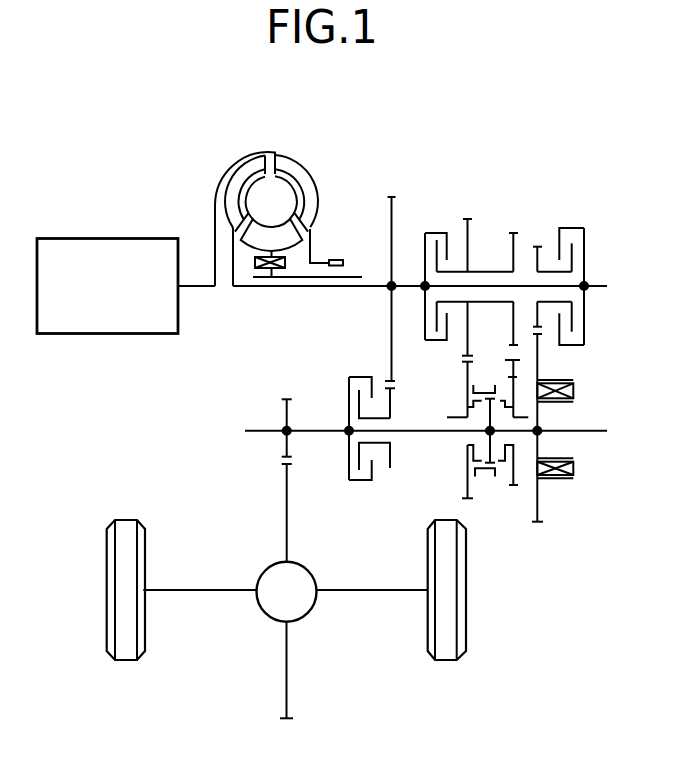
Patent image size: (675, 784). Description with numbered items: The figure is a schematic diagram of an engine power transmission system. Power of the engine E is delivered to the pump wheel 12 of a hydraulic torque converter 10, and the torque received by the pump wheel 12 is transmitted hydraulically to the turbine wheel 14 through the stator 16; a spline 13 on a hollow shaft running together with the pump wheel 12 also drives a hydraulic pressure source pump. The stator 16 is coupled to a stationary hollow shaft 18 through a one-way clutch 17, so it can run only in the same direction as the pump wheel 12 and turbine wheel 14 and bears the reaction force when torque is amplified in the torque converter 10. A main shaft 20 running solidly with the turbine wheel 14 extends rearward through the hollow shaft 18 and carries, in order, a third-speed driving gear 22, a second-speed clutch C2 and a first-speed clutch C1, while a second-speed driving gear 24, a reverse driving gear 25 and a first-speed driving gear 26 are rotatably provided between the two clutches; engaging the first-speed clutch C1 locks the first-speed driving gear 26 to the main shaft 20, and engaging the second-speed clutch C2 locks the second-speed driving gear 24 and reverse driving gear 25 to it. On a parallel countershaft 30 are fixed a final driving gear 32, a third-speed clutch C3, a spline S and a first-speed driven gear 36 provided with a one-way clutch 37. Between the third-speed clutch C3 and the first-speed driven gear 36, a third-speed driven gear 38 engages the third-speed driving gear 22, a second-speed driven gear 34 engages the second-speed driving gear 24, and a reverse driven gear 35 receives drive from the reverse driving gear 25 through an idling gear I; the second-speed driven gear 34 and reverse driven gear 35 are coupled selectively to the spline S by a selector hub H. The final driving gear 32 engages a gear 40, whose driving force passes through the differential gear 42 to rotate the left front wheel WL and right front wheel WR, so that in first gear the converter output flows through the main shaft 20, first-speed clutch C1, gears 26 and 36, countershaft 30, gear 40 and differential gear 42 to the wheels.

The engine E is at (110, 300).
The hydraulic torque converter 10 is at (281, 204).
The pump wheel 12 is at (308, 195).
The spline 13 is at (337, 258).
The turbine wheel 14 is at (235, 192).
The stator 16 is at (266, 232).
The one-way clutch 17 is at (285, 264).
The stationary hollow shaft 18 is at (352, 277).
The main shaft 20 is at (325, 287).
The third-speed driving gear 22 is at (393, 217).
The second-speed driving gear 24 is at (472, 240).
The reverse driving gear 25 is at (512, 252).
The first-speed driving gear 26 is at (537, 257).
The first-speed clutch C1 is at (588, 240).
The second-speed clutch C2 is at (442, 230).
The third-speed clutch C3 is at (346, 388).
The idling gear I is at (505, 359).
The second-speed driven gear 34 is at (465, 380).
The spline S is at (487, 437).
The selector hub H is at (483, 474).
The reverse driven gear 35 is at (515, 470).
The countershaft 30 is at (255, 429).
The final driving gear 32 is at (284, 442).
The third-speed driven gear 38 is at (400, 407).
The gear 40 is at (285, 493).
The differential gear 42 is at (263, 613).
The first-speed driven gear 36 is at (538, 505).
The one-way clutch 37 is at (577, 470).
The left front wheel WL is at (122, 661).
The right front wheel WR is at (446, 661).